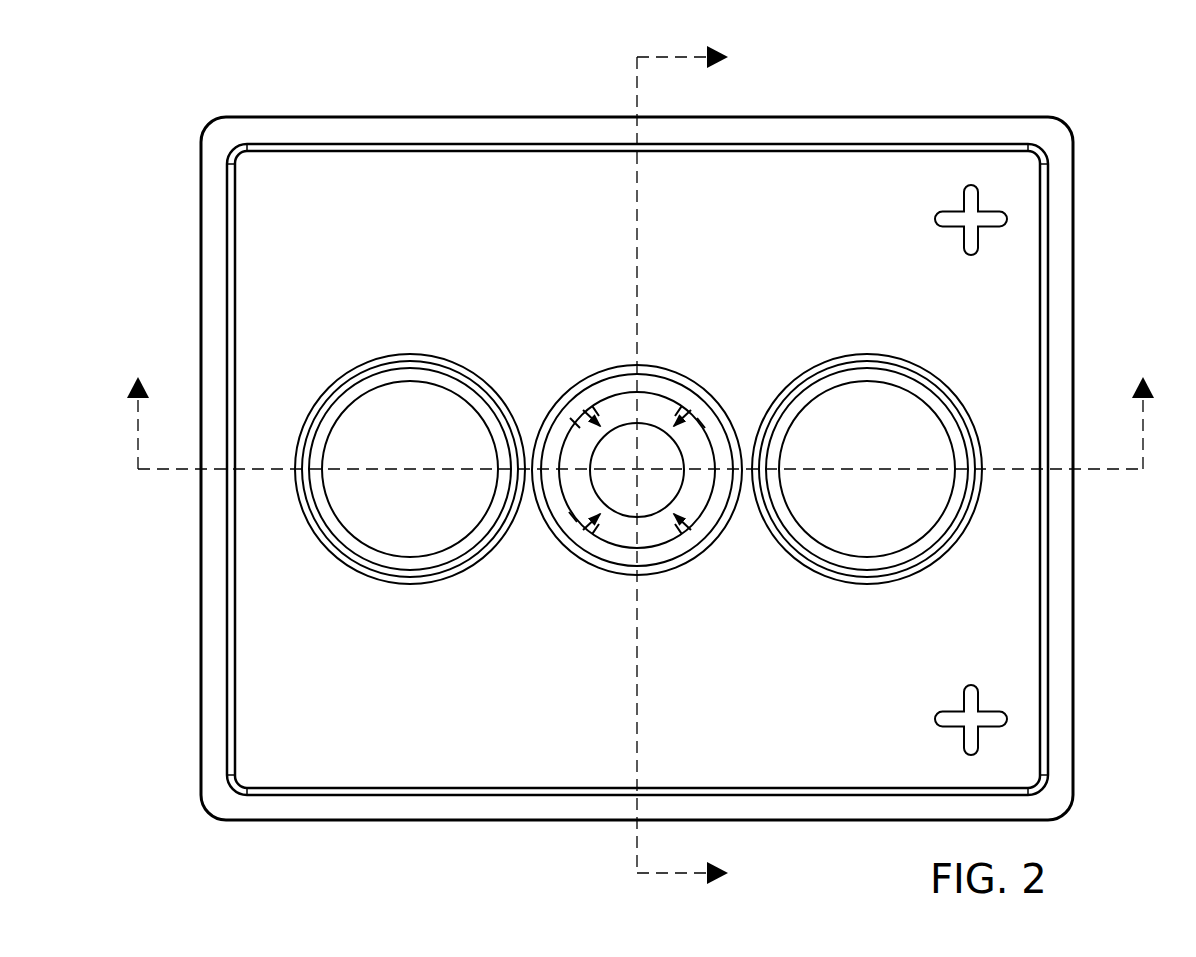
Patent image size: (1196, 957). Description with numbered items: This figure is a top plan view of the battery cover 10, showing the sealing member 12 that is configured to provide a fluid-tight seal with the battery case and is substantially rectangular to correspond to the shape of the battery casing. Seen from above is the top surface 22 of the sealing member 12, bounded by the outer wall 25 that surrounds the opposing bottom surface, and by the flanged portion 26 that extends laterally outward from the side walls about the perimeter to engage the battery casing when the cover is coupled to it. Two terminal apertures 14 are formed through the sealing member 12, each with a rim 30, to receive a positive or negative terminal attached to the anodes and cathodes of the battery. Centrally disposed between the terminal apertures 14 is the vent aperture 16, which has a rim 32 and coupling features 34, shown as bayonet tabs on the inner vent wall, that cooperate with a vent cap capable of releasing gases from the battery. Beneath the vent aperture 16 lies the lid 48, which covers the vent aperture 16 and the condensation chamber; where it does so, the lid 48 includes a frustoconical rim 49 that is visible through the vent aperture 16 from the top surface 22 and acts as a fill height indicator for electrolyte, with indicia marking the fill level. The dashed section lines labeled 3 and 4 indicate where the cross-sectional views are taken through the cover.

The section line 3- 3 is at (639, 415).
The section line 4- 4 is at (682, 465).
The battery cover 10 is at (689, 444).
The sealing member 12 is at (571, 463).
The terminal apertures 14 is at (638, 463).
The vent aperture 16 is at (555, 499).
The top surface 22 is at (260, 244).
The outer wall 25 is at (228, 604).
The flanged portion 26 is at (1052, 143).
The rim 30 is at (440, 567).
The rim 32 is at (692, 540).
The coupling feature 34 is at (660, 393).
The lid 48 is at (432, 436).
The frustoconical rim 49 is at (573, 430).